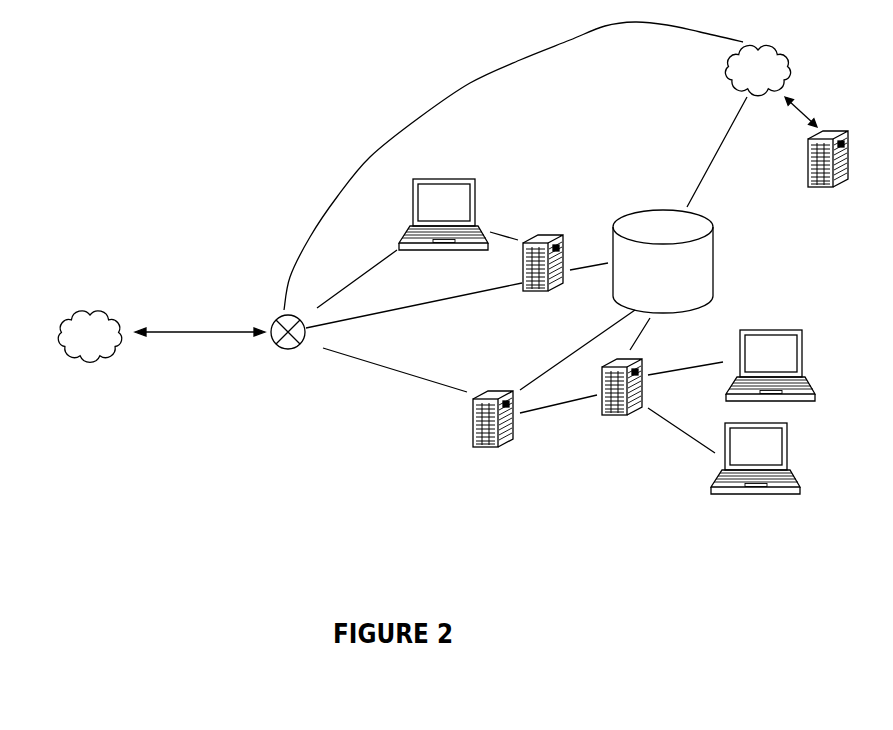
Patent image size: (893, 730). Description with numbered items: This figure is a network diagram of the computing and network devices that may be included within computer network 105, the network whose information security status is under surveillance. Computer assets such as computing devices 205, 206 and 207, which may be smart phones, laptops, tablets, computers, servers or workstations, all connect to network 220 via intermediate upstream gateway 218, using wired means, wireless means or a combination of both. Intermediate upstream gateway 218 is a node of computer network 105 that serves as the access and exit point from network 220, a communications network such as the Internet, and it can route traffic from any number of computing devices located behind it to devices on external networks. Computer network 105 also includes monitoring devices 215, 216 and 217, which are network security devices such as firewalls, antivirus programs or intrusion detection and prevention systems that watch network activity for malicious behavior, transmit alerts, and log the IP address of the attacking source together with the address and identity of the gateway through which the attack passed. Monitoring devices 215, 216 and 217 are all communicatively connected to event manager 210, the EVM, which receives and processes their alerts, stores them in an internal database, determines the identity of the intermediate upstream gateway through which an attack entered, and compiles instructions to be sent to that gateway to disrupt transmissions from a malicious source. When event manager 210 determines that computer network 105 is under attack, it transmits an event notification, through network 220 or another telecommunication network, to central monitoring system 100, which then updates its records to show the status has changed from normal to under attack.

The computer network 105 is at (266, 103).
The network 220 is at (776, 83).
The central monitoring system 100 is at (828, 176).
The computing device 205 is at (462, 215).
The computing device 206 is at (788, 367).
The computing device 207 is at (774, 461).
The event manager 210 is at (680, 303).
The monitoring device 215 is at (560, 228).
The monitoring device 216 is at (487, 453).
The monitoring device 217 is at (620, 425).
The intermediate upstream gateway 218 is at (283, 355).